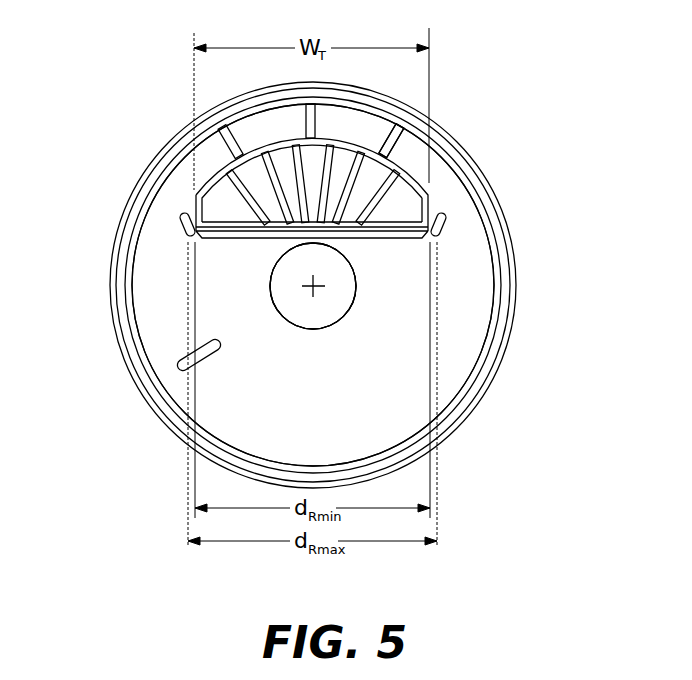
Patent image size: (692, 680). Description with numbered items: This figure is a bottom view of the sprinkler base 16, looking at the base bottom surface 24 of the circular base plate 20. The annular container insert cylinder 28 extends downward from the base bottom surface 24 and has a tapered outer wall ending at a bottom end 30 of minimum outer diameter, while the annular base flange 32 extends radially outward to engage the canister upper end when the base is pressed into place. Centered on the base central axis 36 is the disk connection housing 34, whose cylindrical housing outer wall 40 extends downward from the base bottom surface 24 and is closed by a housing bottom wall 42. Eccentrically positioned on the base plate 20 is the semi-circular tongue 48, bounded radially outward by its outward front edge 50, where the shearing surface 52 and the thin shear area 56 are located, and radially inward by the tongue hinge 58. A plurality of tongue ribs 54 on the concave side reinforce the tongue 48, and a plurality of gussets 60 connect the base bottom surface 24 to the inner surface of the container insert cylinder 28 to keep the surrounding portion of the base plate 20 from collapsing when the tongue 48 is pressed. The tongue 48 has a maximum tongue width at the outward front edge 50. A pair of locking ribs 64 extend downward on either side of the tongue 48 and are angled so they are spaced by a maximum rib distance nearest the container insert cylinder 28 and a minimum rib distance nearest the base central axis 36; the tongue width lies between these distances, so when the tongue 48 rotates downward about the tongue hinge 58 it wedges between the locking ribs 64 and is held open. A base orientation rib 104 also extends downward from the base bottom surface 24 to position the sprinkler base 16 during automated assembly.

The sprinkler base 16 is at (585, 135).
The base plate 20 is at (143, 307).
The base bottom surface 24 is at (313, 285).
The container insert cylinder 28 is at (114, 262).
The bottom end 30 is at (138, 354).
The annular base flange 32 is at (128, 202).
The disk connection housing 34 is at (346, 302).
The base central axis 36 is at (303, 286).
The housing outer wall 40 is at (357, 289).
The housing bottom wall 42 is at (313, 286).
The tongue 48 is at (408, 204).
The outward front edge 50 is at (408, 138).
The shearing surface 52 is at (410, 203).
The tongue ribs 54 is at (240, 186).
The shear area 56 is at (391, 141).
The tongue hinge 58 is at (396, 238).
The gussets 60 is at (238, 156).
The locking ribs 64 is at (181, 226).
The base orientation rib 104 is at (174, 366).